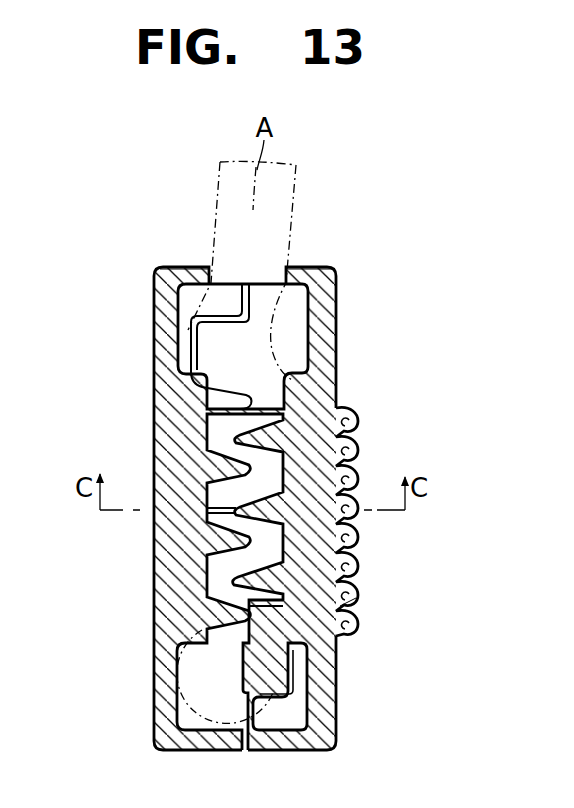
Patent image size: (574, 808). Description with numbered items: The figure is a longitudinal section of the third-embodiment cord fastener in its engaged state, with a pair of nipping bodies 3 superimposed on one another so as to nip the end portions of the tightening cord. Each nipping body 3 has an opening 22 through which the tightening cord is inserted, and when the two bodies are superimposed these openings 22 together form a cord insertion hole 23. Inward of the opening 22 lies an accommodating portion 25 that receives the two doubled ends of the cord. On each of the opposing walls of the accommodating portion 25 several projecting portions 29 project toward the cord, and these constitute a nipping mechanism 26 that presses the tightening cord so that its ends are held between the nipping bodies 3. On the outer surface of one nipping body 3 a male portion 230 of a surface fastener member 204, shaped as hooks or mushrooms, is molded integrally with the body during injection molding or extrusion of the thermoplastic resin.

The nipping body 3 is at (150, 703).
The opening 22 is at (188, 267).
The cord insertion hole 23 is at (243, 258).
The accommodating portion 25 is at (250, 347).
The nipping mechanism 26 is at (228, 487).
The projecting portion 29 is at (250, 470).
The surface fastener member 204 is at (362, 470).
The male portion 230 is at (360, 590).